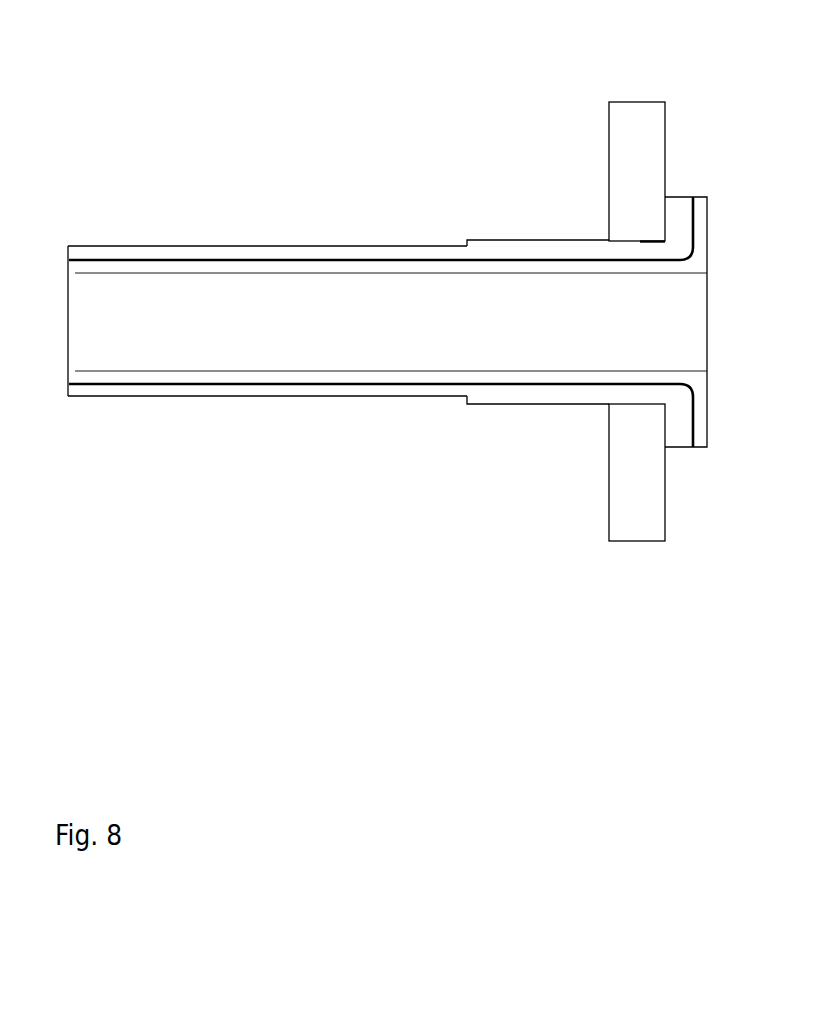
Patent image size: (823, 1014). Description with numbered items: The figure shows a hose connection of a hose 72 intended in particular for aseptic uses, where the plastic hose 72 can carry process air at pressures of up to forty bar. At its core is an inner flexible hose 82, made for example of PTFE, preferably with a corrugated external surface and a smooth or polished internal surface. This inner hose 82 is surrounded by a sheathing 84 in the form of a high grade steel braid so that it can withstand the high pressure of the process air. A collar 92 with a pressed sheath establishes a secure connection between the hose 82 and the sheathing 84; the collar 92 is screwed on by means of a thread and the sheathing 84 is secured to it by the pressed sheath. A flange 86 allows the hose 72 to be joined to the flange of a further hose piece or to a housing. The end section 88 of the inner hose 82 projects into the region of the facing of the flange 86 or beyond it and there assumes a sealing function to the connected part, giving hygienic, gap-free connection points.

The hose 72 is at (416, 182).
The inner flexible hose 82 is at (278, 375).
The sheathing 84 is at (183, 391).
The flange 86 is at (653, 474).
The end section 88 is at (699, 405).
The collar 92 is at (526, 392).